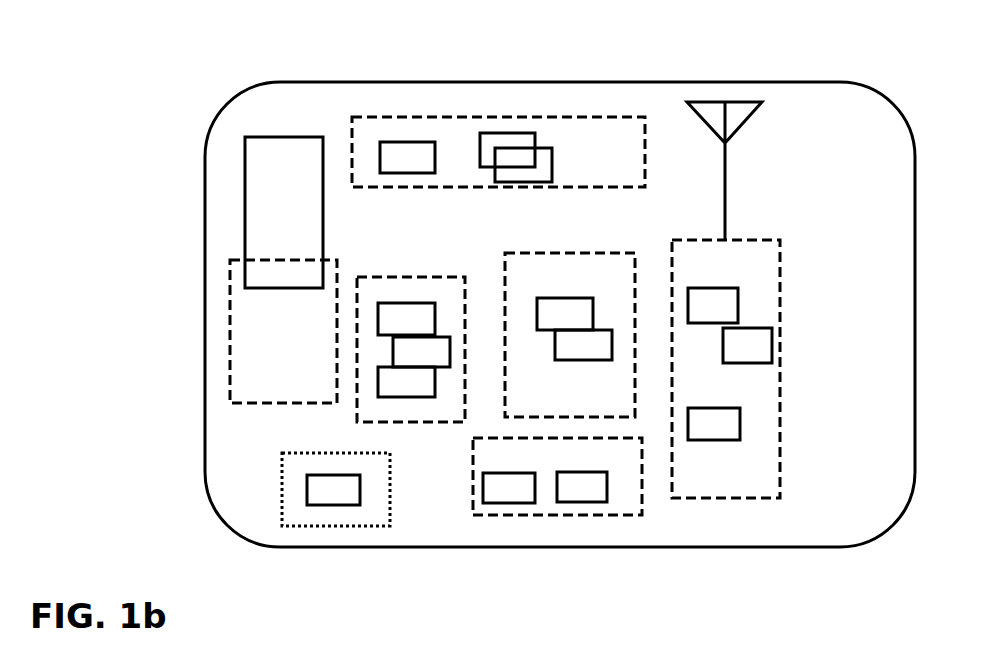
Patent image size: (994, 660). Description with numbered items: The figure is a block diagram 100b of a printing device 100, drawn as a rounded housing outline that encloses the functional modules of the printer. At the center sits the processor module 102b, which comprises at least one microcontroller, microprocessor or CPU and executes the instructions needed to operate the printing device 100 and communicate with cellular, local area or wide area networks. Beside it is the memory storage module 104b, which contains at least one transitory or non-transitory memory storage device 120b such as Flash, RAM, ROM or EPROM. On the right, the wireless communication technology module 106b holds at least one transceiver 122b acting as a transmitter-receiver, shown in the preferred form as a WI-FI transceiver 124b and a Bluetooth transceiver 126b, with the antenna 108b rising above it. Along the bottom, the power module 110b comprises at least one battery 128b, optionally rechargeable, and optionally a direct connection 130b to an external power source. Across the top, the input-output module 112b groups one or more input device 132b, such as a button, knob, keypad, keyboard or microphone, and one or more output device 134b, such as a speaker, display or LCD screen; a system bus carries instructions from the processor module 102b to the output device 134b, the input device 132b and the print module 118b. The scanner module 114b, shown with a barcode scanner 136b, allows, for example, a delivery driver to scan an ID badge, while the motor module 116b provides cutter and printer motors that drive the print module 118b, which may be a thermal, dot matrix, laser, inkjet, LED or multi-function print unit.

The block diagram 100b is at (501, 323).
The printing device 100 is at (203, 305).
The processor module 102b is at (538, 253).
The memory storage module 104b is at (380, 277).
The wireless communication technology module 106b is at (782, 372).
The antenna 108b is at (742, 128).
The power module 110b is at (548, 515).
The input-output (I/O) module 112b is at (473, 117).
The scanner module 114b is at (370, 525).
The motor module 116b is at (255, 410).
The print module 118b is at (292, 288).
The memory storage device 120b is at (425, 397).
The transceiver 122b is at (762, 328).
The WI-FI transceiver 124b is at (718, 440).
The Bluetooth transceiver 126b is at (712, 298).
The battery 128b is at (585, 502).
The direct connection 130b is at (493, 503).
The input device 132b is at (387, 142).
The output device 134b is at (550, 145).
The barcode scanner 136b is at (322, 505).